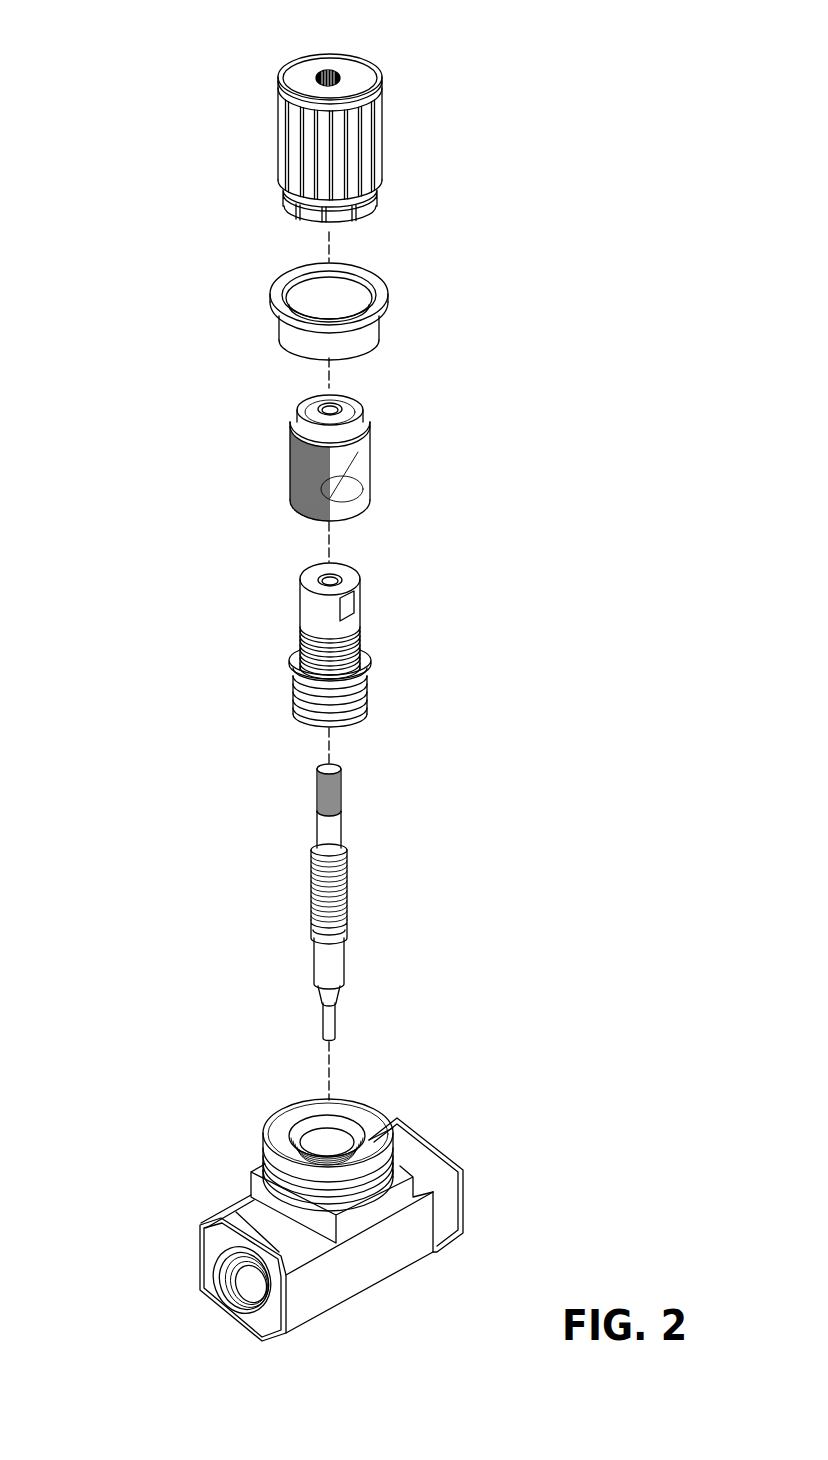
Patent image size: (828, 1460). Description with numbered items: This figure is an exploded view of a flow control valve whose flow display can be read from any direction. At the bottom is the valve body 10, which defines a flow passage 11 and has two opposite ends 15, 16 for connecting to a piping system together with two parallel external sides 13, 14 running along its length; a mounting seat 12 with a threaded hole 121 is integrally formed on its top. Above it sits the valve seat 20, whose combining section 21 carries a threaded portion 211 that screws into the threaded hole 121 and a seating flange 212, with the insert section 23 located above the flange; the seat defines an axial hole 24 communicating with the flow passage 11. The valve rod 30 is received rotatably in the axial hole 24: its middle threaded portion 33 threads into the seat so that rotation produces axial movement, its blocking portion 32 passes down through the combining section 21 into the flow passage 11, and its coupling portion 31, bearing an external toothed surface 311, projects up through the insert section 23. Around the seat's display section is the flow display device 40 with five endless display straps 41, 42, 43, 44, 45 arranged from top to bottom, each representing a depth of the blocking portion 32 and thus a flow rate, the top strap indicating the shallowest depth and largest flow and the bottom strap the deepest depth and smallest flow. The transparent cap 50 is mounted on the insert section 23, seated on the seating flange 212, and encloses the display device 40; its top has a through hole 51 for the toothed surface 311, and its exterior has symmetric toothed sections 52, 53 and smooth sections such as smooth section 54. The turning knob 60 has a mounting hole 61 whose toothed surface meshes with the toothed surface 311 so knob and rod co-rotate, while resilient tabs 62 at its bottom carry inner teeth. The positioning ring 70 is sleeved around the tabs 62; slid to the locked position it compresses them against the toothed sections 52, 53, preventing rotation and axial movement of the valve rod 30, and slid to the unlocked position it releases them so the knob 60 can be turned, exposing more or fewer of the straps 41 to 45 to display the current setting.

The valve body 10 is at (126, 1074).
The flow passage 11 is at (207, 1300).
The mounting seat 12 is at (375, 1120).
The threaded hole 121 is at (294, 1107).
The external side 13 is at (363, 1272).
The external side 14 is at (230, 1207).
The end 15 is at (247, 1322).
The end 16 is at (448, 1152).
The valve seat 20 is at (176, 634).
The combining section 21 is at (184, 673).
The threaded portion 211 is at (295, 702).
The seating flange 212 is at (298, 668).
The insert section 23 is at (305, 603).
The axial hole 24 is at (305, 573).
The valve rod 30 is at (194, 882).
The coupling portion 31 is at (328, 827).
The external toothed surface 311 is at (343, 792).
The blocking portion 32 is at (334, 1023).
The middle threaded portion 33 is at (348, 888).
The flow display device 40 is at (470, 592).
The endless display strap 41 is at (357, 632).
The endless display strap 42 is at (357, 639).
The endless display strap 43 is at (358, 647).
The endless display strap 44 is at (362, 658).
The endless display strap 45 is at (367, 675).
The transparent cap 50 is at (491, 462).
The through hole 51 is at (303, 398).
The toothed section 52 is at (290, 475).
The toothed section 53 is at (368, 445).
The smooth section 54 is at (358, 480).
The turning knob 60 is at (486, 100).
The mounting hole 61 is at (345, 62).
The resilient tabs 62 is at (307, 208).
The positioning ring 70 is at (383, 298).